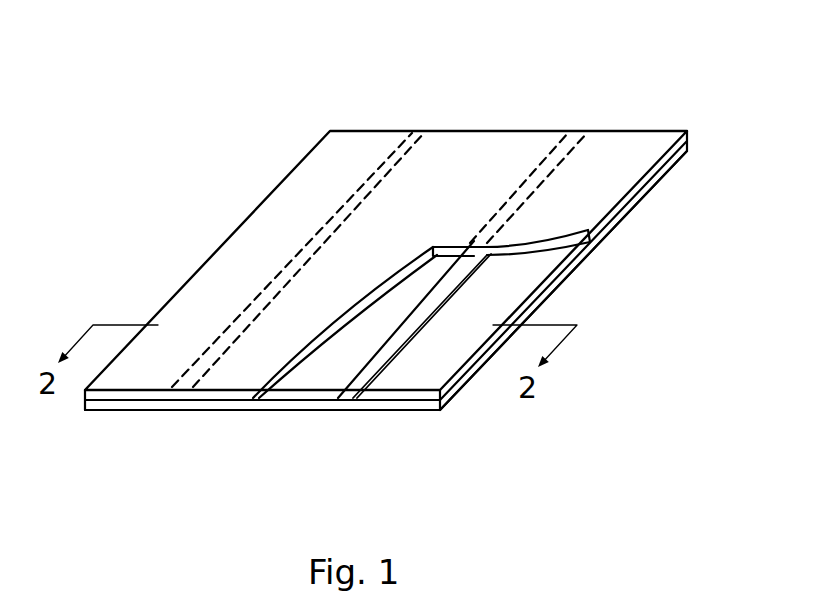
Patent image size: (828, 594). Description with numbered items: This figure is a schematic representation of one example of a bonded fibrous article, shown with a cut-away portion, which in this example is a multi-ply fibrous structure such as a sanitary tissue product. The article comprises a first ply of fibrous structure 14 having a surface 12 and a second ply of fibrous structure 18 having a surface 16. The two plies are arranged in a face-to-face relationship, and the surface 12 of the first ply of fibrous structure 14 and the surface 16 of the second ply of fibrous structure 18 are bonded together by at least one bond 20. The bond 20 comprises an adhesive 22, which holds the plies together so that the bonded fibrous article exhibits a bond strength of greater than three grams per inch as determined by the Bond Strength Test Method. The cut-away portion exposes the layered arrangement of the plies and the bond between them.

The surface of first ply 12 is at (560, 254).
The first ply of fibrous structure 14 is at (462, 196).
The surface of second ply 16 is at (453, 366).
The second ply of fibrous structure 18 is at (627, 207).
The bond 20 is at (292, 254).
The adhesive 22 is at (392, 157).